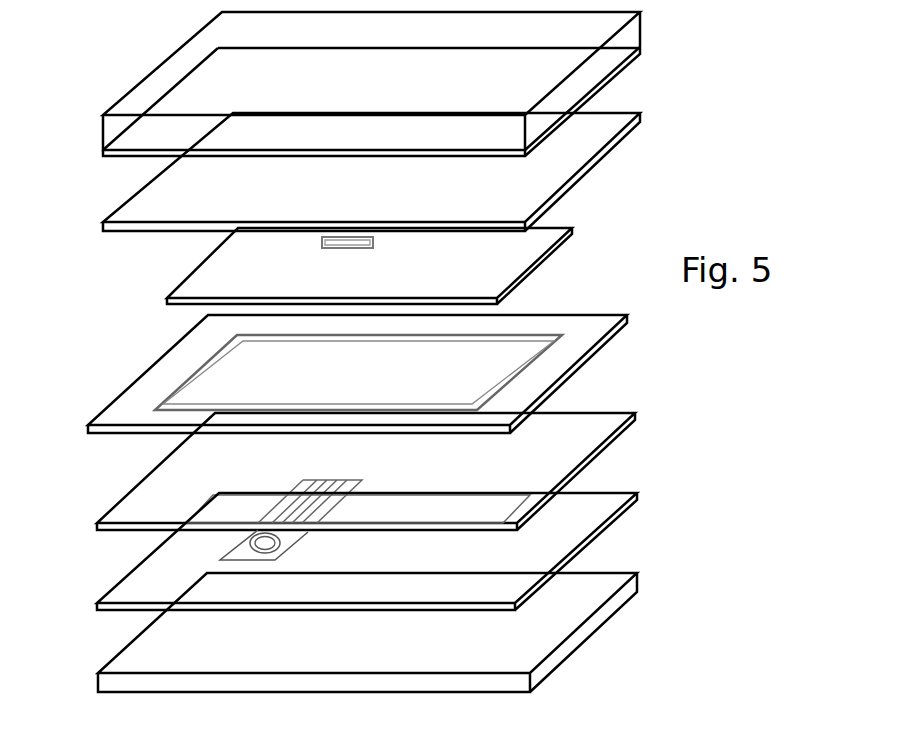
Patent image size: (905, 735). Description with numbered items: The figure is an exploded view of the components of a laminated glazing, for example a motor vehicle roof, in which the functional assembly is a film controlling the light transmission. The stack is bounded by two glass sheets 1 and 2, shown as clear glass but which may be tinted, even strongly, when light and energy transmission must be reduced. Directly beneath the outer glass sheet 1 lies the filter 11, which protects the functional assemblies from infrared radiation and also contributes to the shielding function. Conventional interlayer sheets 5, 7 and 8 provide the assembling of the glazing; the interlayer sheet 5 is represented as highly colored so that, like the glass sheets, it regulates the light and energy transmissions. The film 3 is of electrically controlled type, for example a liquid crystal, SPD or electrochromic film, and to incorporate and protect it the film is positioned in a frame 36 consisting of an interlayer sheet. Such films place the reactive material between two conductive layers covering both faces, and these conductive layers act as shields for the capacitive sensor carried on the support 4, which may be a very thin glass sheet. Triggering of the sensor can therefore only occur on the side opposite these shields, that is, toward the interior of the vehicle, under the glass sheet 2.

The glass sheet 1 is at (587, 44).
The filter 11 is at (605, 87).
The interlayer sheet 5 is at (466, 205).
The film controlling the light transmission 3 is at (459, 270).
The frame 36 is at (591, 348).
The interlayer sheet 7 is at (555, 463).
The interlayer sheet 8 is at (562, 543).
The support 4 is at (232, 552).
The glass sheet 2 is at (522, 666).